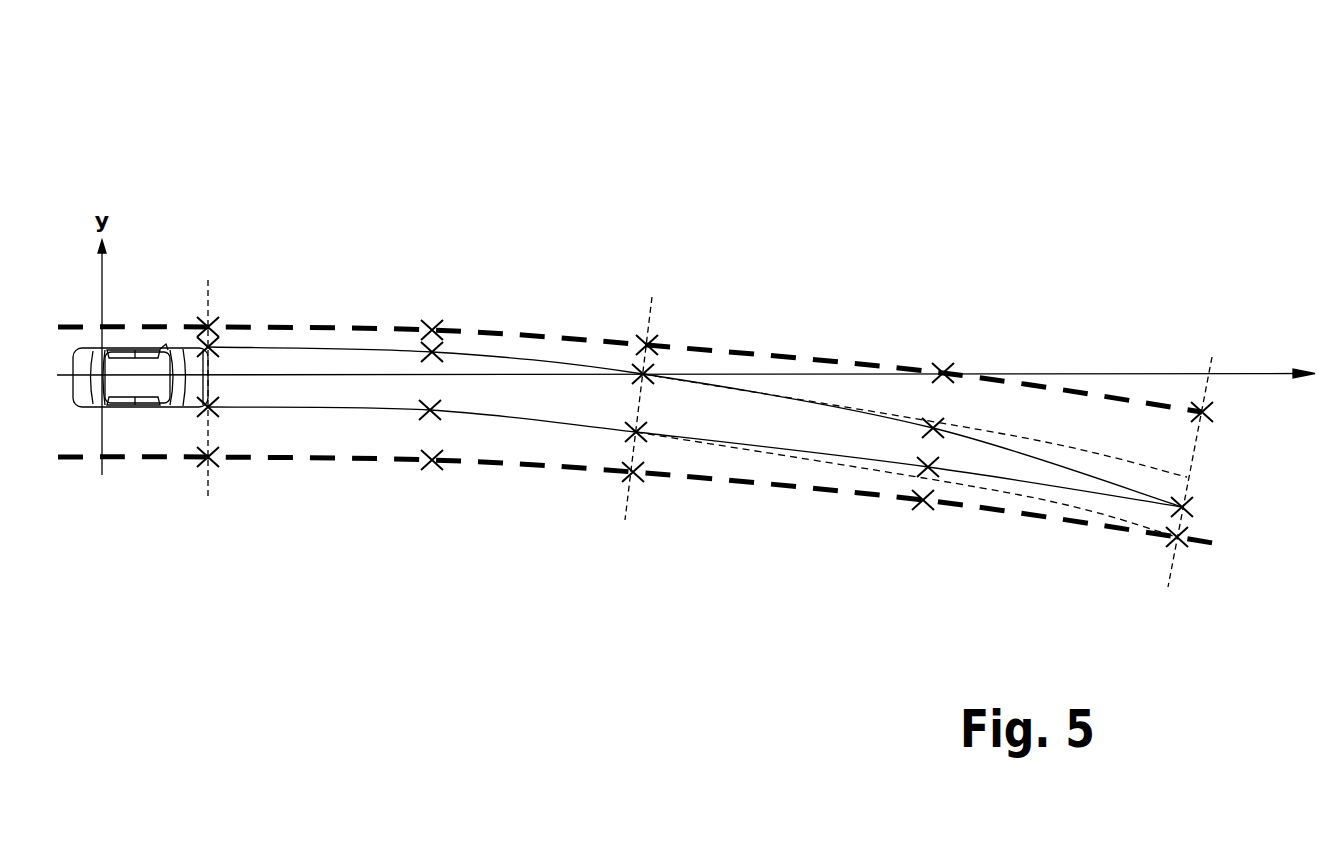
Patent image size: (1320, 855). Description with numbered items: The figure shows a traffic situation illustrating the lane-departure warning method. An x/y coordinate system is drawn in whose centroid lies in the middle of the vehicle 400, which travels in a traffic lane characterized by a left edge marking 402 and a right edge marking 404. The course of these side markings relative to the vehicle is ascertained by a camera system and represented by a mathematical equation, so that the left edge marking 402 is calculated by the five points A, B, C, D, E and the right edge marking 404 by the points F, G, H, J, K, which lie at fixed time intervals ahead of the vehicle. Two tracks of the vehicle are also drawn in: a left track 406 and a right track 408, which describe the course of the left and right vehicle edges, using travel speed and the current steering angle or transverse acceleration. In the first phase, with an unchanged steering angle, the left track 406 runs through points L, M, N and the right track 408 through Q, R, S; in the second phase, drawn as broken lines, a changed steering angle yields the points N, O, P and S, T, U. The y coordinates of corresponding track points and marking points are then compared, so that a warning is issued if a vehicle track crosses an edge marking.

The vehicle 400 is at (72, 408).
The left edge marking 402 is at (315, 320).
The right edge marking 404 is at (325, 463).
The left vehicle track 406 is at (507, 358).
The right vehicle track 408 is at (548, 423).